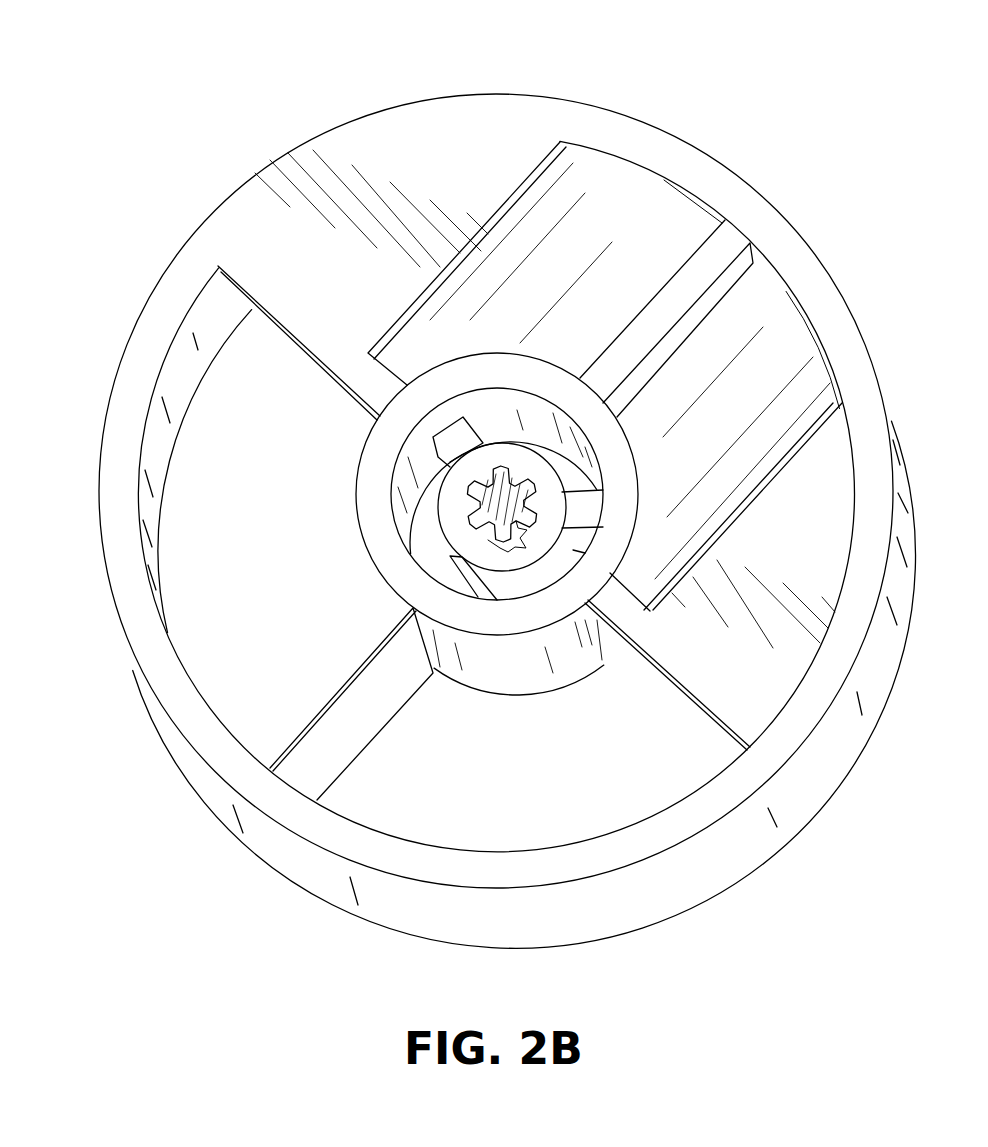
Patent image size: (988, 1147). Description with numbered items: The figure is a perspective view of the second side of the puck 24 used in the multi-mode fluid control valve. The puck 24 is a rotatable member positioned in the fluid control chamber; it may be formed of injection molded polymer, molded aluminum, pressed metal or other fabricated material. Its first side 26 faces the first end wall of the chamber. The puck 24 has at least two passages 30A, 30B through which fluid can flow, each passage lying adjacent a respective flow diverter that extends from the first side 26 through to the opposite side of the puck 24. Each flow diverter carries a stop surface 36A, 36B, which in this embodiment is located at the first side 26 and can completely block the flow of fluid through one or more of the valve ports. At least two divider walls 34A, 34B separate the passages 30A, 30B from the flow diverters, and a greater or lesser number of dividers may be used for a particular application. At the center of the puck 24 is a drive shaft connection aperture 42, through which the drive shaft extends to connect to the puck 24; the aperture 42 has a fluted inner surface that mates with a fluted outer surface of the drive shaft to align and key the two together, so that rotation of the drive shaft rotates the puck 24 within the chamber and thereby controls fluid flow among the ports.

The puck 24 is at (168, 130).
The first side 26 is at (107, 508).
The passage 30A is at (247, 645).
The passage 30B is at (478, 825).
The divider wall 34A is at (278, 741).
The divider wall 34B is at (723, 245).
The stop surface 36A is at (448, 178).
The stop surface 36B is at (747, 693).
The drive shaft connection aperture 42 is at (488, 475).